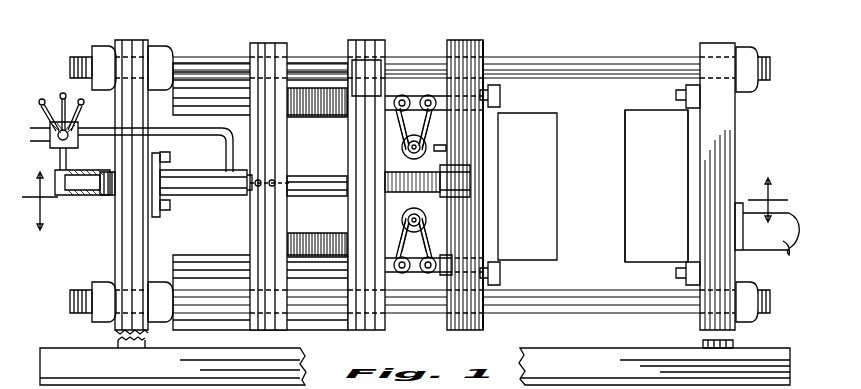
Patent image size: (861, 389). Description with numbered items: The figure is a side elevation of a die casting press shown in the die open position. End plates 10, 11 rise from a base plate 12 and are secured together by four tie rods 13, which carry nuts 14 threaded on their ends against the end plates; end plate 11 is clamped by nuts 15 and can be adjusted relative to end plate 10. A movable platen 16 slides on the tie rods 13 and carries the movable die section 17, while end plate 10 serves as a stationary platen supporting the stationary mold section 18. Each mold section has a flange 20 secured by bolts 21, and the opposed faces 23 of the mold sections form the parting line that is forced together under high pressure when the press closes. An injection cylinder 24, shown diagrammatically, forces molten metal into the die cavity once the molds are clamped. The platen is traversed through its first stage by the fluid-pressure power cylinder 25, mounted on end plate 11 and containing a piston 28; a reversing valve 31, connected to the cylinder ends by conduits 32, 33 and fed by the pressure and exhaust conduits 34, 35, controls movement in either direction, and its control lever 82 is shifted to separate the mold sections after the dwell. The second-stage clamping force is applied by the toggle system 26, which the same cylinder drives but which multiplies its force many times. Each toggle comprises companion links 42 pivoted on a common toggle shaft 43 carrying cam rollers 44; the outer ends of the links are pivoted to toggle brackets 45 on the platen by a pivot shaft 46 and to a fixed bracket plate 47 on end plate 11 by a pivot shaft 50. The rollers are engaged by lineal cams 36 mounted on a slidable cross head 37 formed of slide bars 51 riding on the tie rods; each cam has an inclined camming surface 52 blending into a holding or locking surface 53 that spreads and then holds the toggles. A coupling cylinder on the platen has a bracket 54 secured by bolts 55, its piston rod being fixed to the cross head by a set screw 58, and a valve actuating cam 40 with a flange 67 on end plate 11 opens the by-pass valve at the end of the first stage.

The end plate 10 is at (722, 115).
The end plate 11 is at (118, 265).
The base plate 12 is at (760, 360).
The tie rods 13 is at (610, 70).
The nuts 14 is at (103, 47).
The nuts 15 is at (160, 46).
The movable platen 16 is at (478, 46).
The die or mold section 17 is at (556, 116).
The stationary mold section 18 is at (625, 156).
The flange 20 is at (688, 128).
The bolts 21 is at (676, 98).
The opposed faces 23 is at (625, 212).
The injection cylinder 24 is at (792, 250).
The fluid-pressure power cylinder 25 is at (100, 200).
The toggle system 26 is at (426, 54).
The piston 28 is at (72, 200).
The reversing valve 31 is at (78, 120).
The conduit 32 is at (68, 156).
The conduit 33 is at (206, 139).
The pressure conduit 34 is at (34, 115).
The exhaust conduit 35 is at (36, 176).
The lineal cams 36 is at (308, 194).
The cross head 37 is at (274, 40).
The valve actuating cam 40 is at (207, 196).
The toggle links 42 is at (444, 250).
The toggle shaft 43 is at (425, 148).
The cam rollers 44 is at (409, 142).
The toggle brackets 45 is at (457, 84).
The pivot shaft 46 is at (430, 88).
The bracket plate 47 is at (212, 86).
The pivot shaft 50 is at (402, 86).
The slide bars 51 is at (252, 46).
The camming surface 52 is at (366, 78).
The holding or locking surface 53 is at (303, 88).
The bracket 54 is at (453, 192).
The bolts 55 is at (445, 144).
The set screw 58 is at (274, 180).
The flange 67 is at (154, 210).
The control lever 82 is at (58, 98).